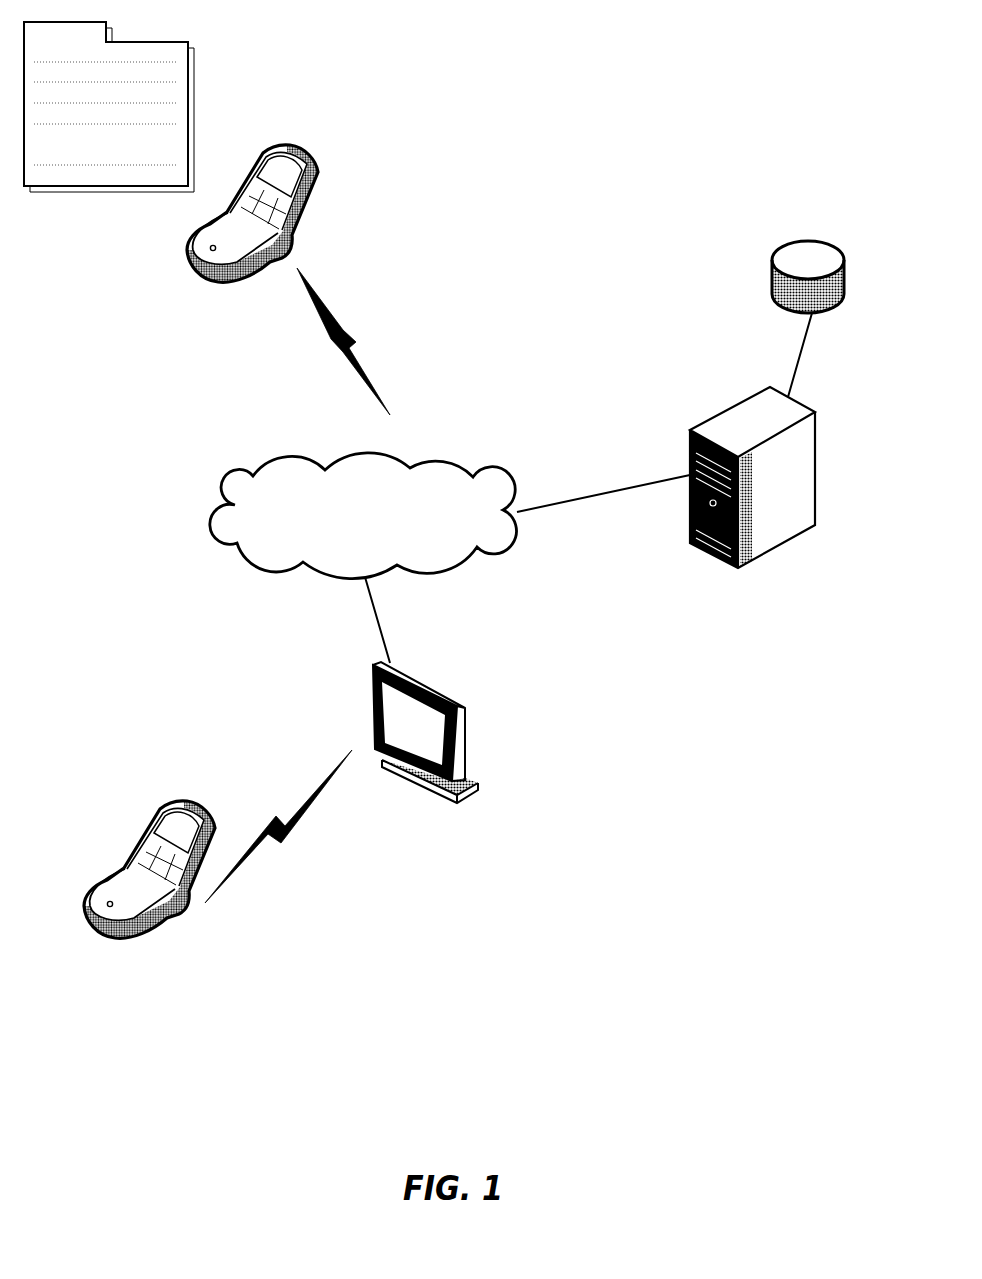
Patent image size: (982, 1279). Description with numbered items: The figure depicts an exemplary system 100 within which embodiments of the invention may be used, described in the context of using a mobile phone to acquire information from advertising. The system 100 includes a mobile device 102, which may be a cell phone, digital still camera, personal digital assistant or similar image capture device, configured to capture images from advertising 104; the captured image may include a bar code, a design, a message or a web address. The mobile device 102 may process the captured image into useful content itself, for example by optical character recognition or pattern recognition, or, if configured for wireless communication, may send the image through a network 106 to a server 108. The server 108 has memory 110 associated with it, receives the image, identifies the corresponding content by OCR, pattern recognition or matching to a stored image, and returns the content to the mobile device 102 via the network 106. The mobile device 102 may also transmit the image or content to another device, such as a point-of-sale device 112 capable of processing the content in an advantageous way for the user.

The system 100 is at (650, 132).
The mobile device 102 is at (320, 159).
The advertising 104 is at (190, 68).
The network 106 is at (363, 516).
The server 108 is at (818, 468).
The memory 110 is at (827, 242).
The point-of-sale (POS) device 112 is at (450, 687).